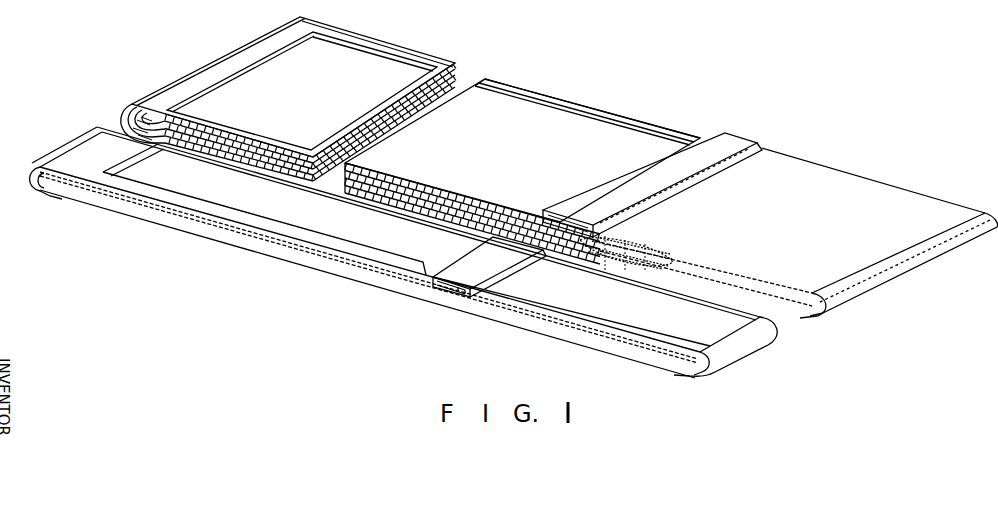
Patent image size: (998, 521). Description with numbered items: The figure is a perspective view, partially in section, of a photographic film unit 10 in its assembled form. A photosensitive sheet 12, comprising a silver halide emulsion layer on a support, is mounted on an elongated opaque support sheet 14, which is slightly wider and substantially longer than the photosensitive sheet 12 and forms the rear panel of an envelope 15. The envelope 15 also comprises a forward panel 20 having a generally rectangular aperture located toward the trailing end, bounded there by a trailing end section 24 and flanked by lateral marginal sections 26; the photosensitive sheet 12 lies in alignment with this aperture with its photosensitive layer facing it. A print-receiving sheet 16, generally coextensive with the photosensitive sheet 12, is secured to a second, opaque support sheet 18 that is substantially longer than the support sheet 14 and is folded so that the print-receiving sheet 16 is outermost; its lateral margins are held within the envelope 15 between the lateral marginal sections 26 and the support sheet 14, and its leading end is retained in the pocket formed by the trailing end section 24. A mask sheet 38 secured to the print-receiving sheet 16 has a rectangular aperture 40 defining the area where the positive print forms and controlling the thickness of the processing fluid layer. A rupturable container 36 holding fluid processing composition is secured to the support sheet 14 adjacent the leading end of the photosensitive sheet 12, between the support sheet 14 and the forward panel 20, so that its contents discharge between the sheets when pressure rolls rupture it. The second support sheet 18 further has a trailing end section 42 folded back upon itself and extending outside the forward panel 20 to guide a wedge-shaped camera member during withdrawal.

The film unit 10 is at (645, 93).
The photosensitive sheet 12 is at (318, 175).
The support sheet 14 is at (375, 197).
The envelope 15 is at (570, 86).
The print-receiving sheet 16 is at (512, 163).
The second support sheet 18 is at (400, 203).
The forward panel 20 is at (787, 176).
The trailing end section 24 is at (207, 76).
The lateral marginal sections 26 is at (461, 62).
The rupturable container 36 is at (660, 270).
The mask sheet 38 is at (300, 50).
The aperture 40 is at (324, 58).
The trailing end section 42 is at (710, 150).